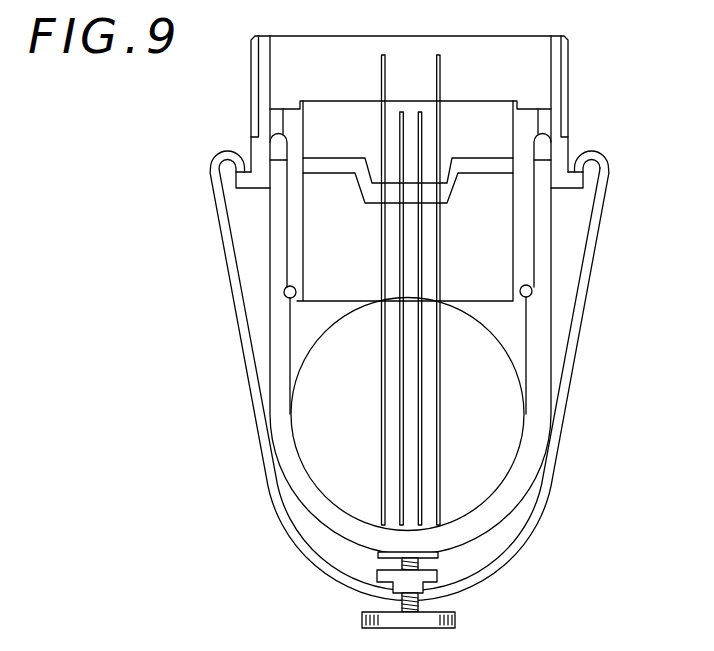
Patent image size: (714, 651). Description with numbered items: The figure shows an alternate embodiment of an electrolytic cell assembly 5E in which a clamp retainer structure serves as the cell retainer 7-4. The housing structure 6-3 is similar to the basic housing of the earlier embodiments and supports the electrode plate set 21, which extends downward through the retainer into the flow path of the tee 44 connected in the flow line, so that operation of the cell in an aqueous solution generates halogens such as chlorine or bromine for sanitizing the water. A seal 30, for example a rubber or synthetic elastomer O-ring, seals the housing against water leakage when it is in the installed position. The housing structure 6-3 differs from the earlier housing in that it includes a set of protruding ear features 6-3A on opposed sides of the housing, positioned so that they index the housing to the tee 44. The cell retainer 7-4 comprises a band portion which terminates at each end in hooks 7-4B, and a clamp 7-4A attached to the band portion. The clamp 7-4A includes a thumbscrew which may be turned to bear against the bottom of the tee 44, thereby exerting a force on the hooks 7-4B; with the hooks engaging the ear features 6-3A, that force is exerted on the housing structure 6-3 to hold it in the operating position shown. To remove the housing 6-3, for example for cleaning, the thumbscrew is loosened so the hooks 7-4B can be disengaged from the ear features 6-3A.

The electrolytic cell assembly 5E is at (589, 67).
The housing structure 6-3 is at (257, 150).
The ear features 6-3A is at (572, 190).
The cell retainer 7-4 is at (426, 360).
The clamp 7-4A is at (395, 601).
The hooks 7-4B is at (596, 152).
The seal 30 is at (533, 289).
The electrode plate set 21 is at (440, 432).
The tee 44 is at (278, 437).